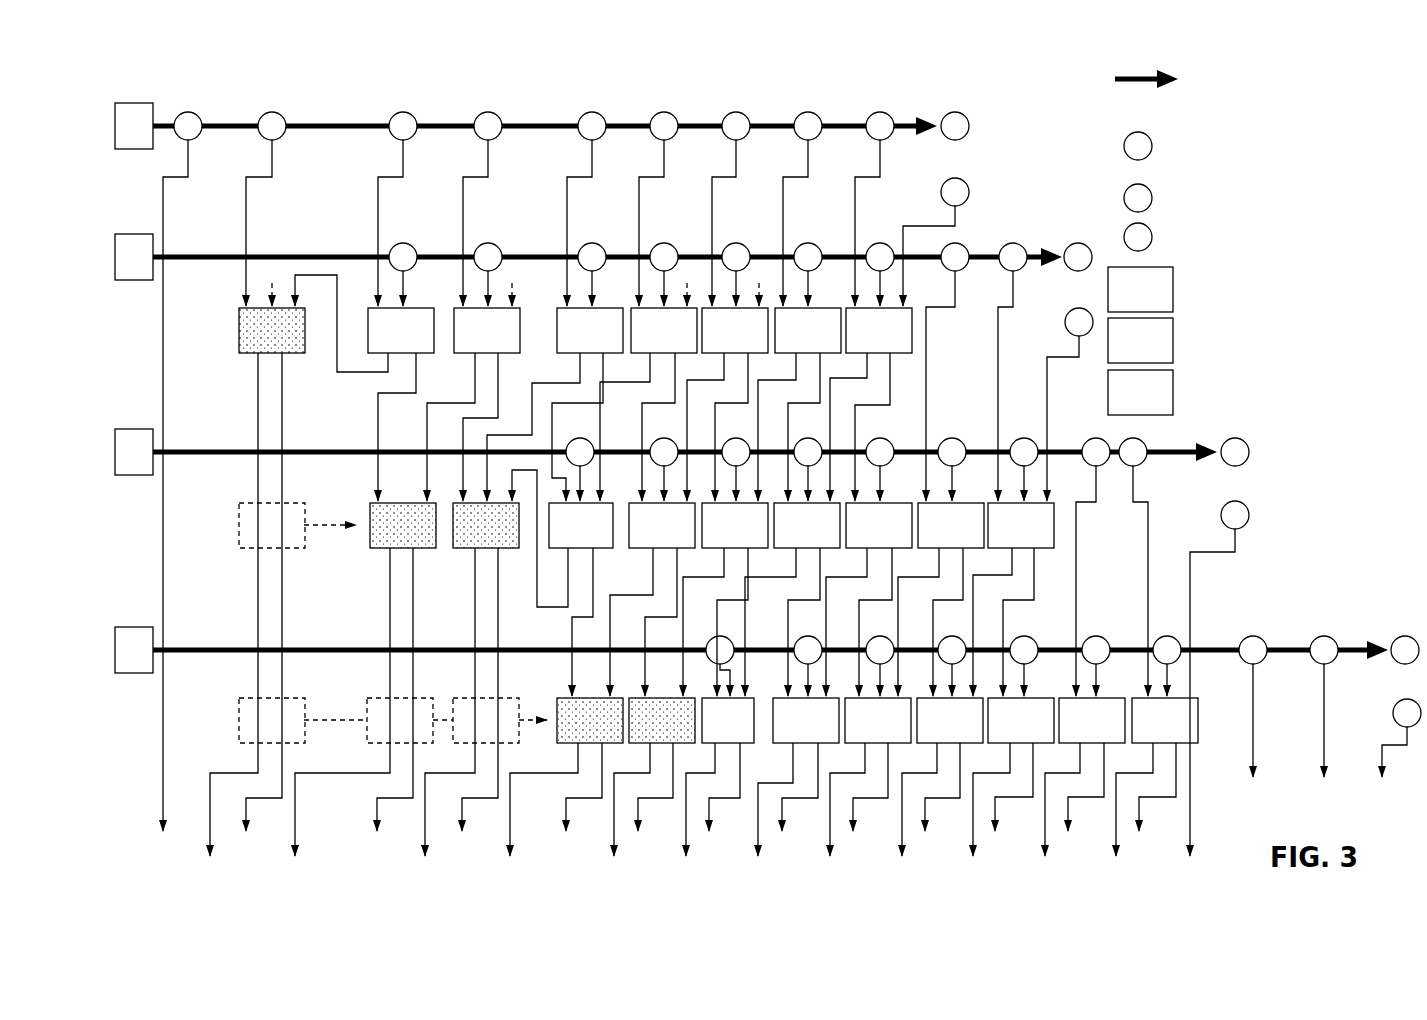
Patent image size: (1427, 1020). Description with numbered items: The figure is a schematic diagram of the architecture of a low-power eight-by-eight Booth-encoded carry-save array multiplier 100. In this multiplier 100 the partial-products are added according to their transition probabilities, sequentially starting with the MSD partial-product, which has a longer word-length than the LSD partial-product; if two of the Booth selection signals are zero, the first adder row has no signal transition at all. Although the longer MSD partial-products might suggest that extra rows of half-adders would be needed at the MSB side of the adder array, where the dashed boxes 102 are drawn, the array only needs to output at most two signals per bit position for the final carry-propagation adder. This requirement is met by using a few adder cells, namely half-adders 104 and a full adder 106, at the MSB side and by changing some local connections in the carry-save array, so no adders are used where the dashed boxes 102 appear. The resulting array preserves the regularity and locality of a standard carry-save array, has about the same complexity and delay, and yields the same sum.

The Booth-encoded carry-save array multiplier 100 is at (196, 69).
The dashed boxes 102 is at (250, 551).
The half-adders 104 is at (247, 355).
The full adder 106 is at (463, 551).